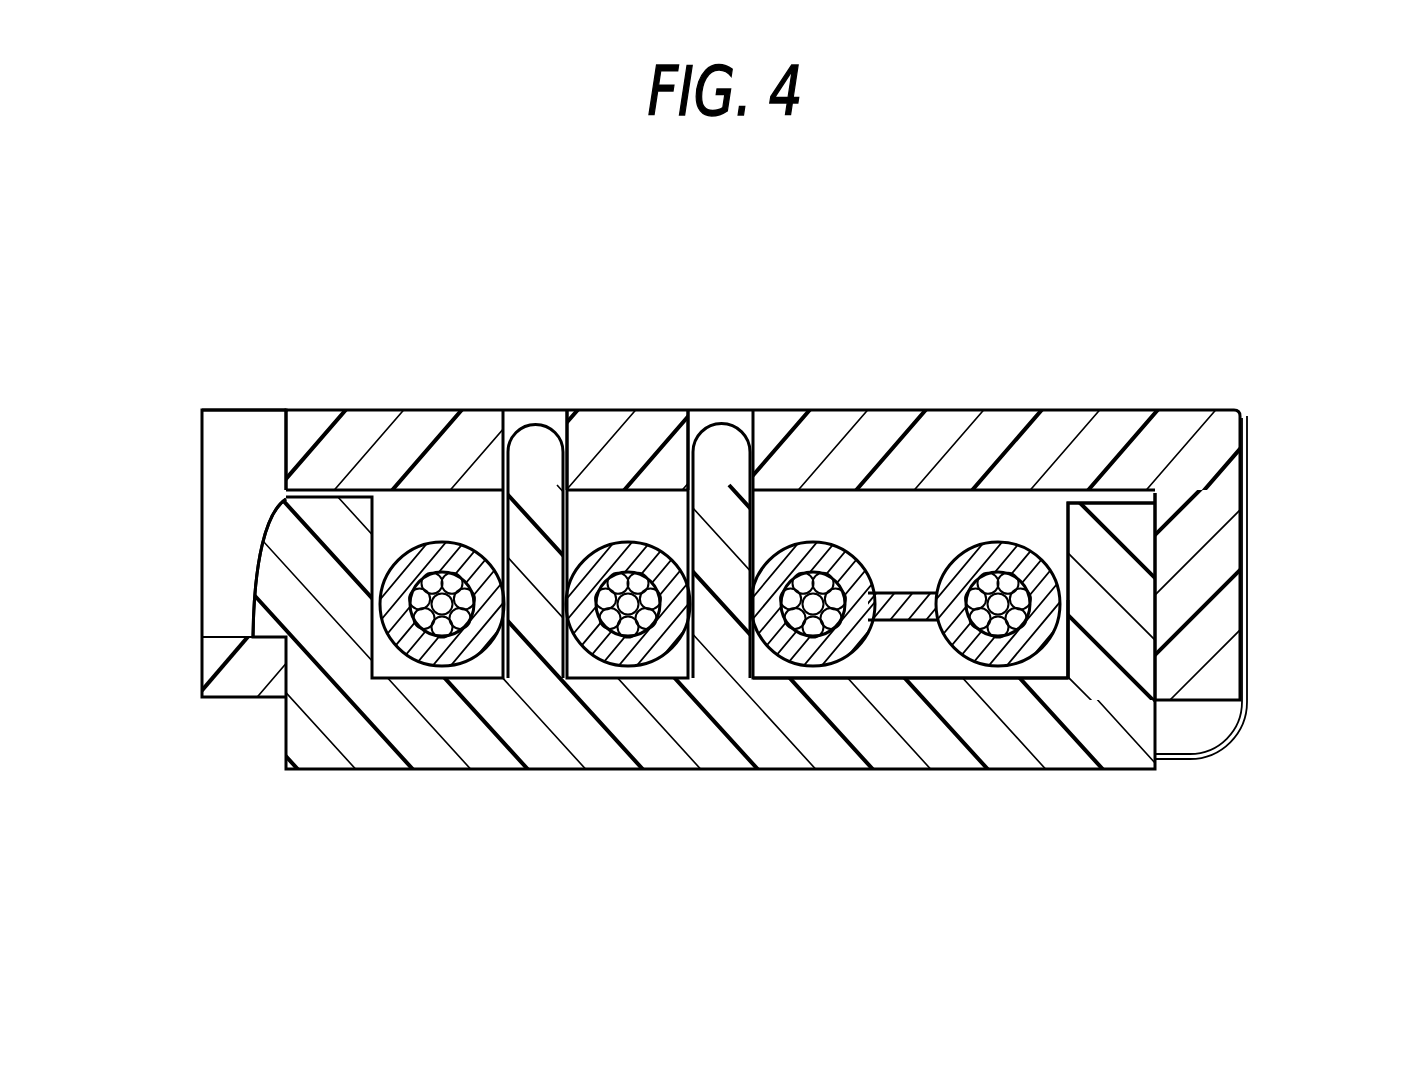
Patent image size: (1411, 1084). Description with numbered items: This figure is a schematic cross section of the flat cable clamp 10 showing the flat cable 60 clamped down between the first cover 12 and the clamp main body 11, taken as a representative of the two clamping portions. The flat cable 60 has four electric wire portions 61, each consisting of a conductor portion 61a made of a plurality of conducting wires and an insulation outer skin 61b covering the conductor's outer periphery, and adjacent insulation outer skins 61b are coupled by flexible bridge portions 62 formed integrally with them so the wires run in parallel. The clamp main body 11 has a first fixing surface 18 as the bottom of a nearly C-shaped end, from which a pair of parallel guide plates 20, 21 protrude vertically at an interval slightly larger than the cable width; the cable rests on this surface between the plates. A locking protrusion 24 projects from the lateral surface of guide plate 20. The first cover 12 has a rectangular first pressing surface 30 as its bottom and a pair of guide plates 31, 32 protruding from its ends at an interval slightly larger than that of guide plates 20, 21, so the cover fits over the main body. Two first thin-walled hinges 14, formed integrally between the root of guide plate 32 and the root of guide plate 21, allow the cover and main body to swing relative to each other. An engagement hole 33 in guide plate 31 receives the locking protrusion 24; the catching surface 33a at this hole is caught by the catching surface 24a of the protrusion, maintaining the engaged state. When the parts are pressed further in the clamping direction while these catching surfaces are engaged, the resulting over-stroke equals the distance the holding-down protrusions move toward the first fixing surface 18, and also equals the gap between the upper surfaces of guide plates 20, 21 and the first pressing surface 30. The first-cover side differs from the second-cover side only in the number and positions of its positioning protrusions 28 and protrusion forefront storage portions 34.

The flat cable clamp 10 is at (643, 290).
The clamp main body 11 is at (1065, 678).
The first cover 12 is at (1018, 412).
The first thin-walled hinge 14 is at (1233, 736).
The first fixing surface 18 is at (1055, 668).
The guide plate 20 is at (322, 513).
The guide plate 21 is at (1115, 518).
The locking protrusion 24 is at (260, 581).
The catching surface 24a is at (273, 638).
The positioning protrusion 28 is at (705, 458).
The first pressing surface 30 is at (847, 497).
The guide plate 31 is at (202, 537).
The guide plate 32 is at (1227, 553).
The engagement hole 33 is at (237, 482).
The catching surface 33a is at (257, 636).
The protrusion forefront storage portion 34 is at (537, 550).
The flat cable 60 is at (483, 520).
The electric wire portion 61 is at (443, 543).
The conductor portion 61a is at (457, 640).
The insulation outer skin 61b is at (407, 645).
The bridge portion 62 is at (893, 592).